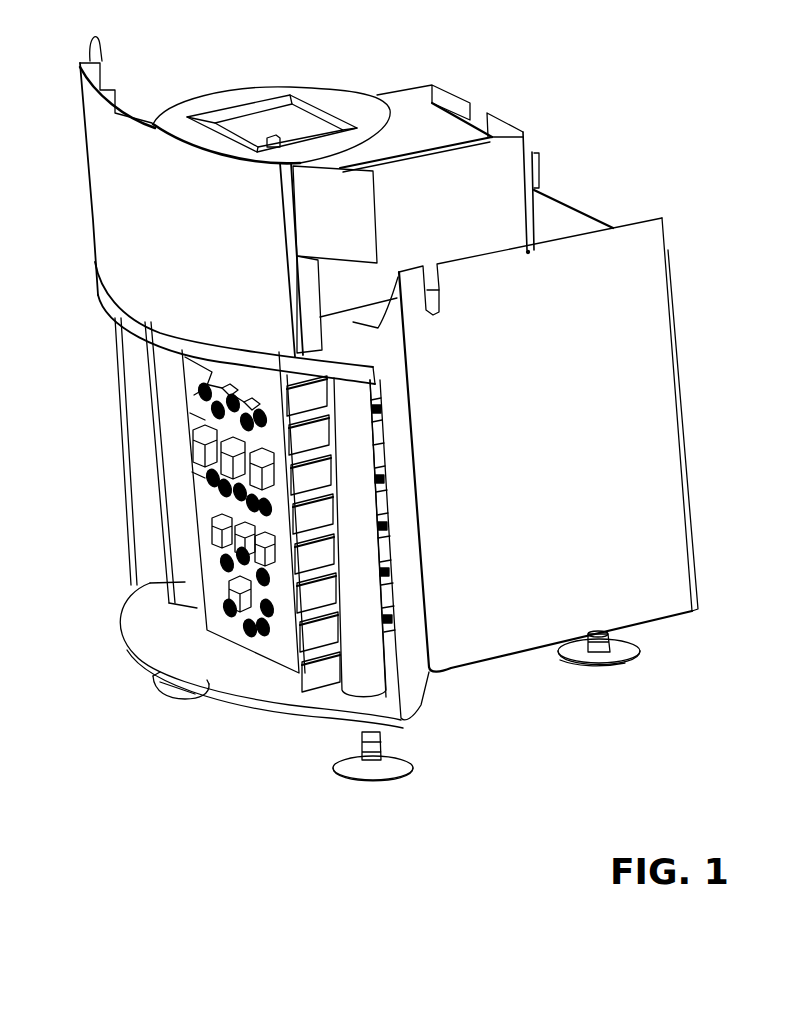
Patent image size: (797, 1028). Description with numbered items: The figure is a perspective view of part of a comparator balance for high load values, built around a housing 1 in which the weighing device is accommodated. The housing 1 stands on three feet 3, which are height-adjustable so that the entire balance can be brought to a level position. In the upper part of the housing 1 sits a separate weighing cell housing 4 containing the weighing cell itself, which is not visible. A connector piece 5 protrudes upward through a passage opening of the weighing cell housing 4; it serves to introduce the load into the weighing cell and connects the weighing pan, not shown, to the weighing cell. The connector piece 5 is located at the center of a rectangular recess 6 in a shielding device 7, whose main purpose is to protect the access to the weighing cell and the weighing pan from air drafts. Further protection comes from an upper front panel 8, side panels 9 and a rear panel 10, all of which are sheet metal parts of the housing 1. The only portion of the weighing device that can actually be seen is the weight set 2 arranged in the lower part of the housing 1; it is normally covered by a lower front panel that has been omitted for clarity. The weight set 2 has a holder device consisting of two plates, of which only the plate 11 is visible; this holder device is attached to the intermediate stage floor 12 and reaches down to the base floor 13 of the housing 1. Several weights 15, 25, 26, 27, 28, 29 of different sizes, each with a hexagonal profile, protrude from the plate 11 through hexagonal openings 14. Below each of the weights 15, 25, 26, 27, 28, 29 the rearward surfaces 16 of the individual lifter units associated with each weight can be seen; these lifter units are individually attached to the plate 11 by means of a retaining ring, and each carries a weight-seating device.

The housing 1 is at (385, 416).
The weight set 2 is at (257, 653).
The feet 3 is at (160, 693).
The weighing cell housing 4 is at (410, 130).
The connector piece 5 is at (268, 138).
The rectangular recess 6 is at (295, 128).
The shielding device 7 is at (176, 130).
The upper front panel 8 is at (127, 202).
The side panels 9 is at (538, 177).
The rear panel 10 is at (673, 262).
The plate 11 is at (213, 608).
The intermediate stage floor 12 is at (353, 322).
The base floor 13 is at (318, 700).
The hexagonal openings 14 is at (207, 405).
The weight 15 is at (200, 445).
The rearward surfaces 16 is at (180, 403).
The weight 25 is at (213, 528).
The weight 26 is at (225, 550).
The weight 27 is at (200, 378).
The weight 28 is at (252, 605).
The weight 29 is at (203, 475).